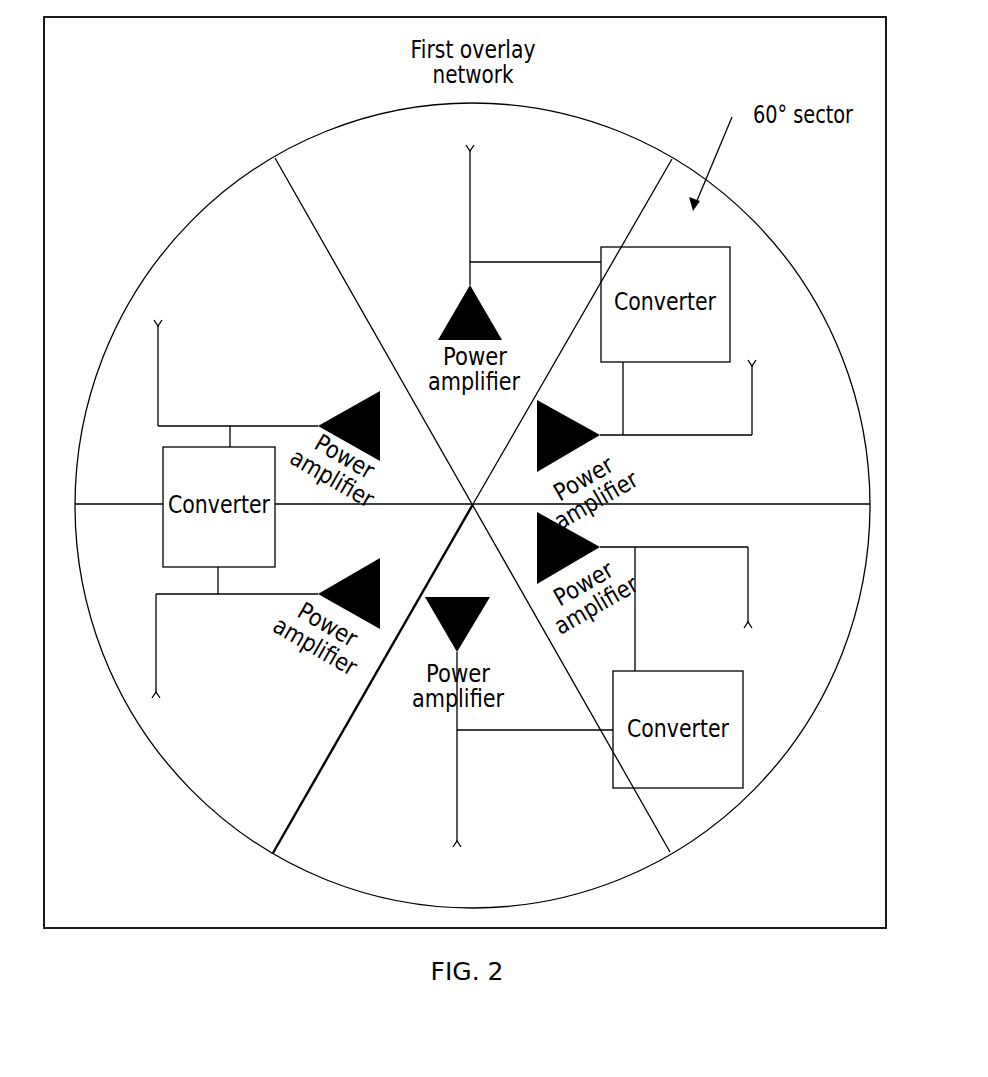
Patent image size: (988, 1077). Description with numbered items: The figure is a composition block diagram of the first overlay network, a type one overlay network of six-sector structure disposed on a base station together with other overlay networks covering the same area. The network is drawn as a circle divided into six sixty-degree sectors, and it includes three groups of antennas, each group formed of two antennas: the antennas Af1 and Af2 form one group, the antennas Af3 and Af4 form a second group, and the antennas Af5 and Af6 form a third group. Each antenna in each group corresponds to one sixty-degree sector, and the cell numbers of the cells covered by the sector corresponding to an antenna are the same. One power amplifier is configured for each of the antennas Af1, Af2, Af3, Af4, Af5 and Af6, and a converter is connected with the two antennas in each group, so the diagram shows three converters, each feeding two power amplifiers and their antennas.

The antenna Af1 is at (511, 203).
The antenna Af2 is at (782, 397).
The antenna Af3 is at (707, 587).
The antenna Af4 is at (485, 788).
The antenna Af5 is at (188, 646).
The antenna Af6 is at (189, 373).